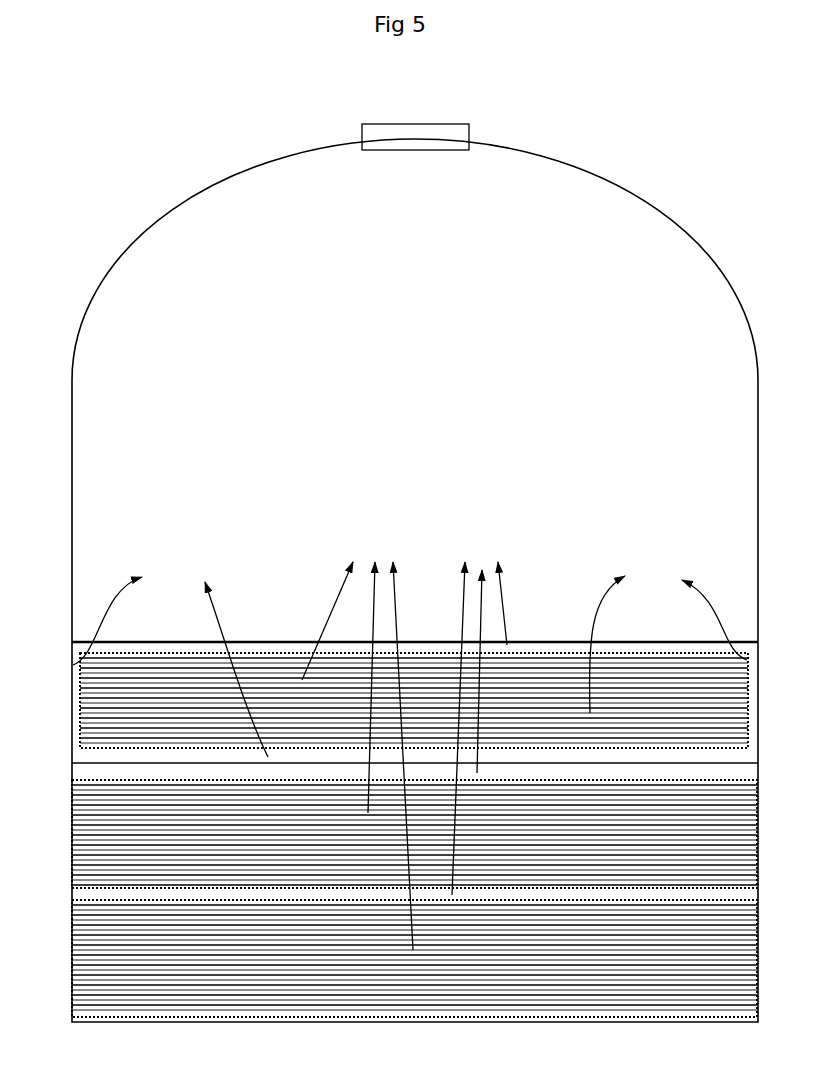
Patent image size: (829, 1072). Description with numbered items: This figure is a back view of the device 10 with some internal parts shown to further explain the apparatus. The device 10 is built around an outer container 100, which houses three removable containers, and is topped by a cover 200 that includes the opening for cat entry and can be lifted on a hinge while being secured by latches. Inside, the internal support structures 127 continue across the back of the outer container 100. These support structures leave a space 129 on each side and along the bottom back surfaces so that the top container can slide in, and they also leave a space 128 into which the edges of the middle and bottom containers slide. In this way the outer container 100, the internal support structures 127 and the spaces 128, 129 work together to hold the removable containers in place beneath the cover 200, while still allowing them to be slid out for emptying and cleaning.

The device 10 is at (243, 142).
The cover 200 is at (519, 233).
The outer container 100 is at (33, 717).
The internal support structures 127 is at (357, 739).
The space 128 is at (479, 711).
The space 129 is at (410, 661).